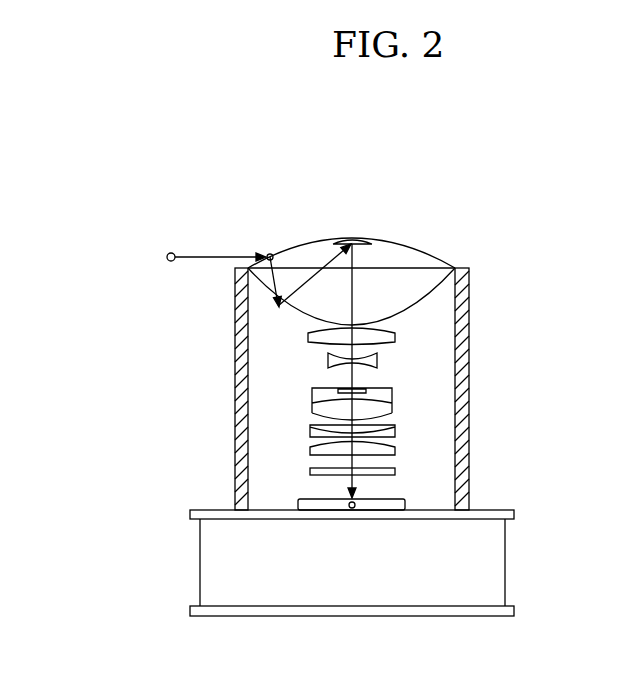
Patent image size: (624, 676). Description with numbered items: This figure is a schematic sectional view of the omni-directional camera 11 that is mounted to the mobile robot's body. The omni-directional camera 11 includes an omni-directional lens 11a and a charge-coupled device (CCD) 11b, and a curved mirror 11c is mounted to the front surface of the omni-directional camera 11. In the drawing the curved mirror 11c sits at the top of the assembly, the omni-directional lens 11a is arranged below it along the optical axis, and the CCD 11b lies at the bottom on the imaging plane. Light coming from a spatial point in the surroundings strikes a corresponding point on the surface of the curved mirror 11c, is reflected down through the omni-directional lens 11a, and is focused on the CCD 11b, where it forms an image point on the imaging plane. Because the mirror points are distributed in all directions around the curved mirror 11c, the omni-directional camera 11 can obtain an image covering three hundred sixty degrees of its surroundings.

The omni-directional camera 11 is at (366, 149).
The omni-directional lens 11a is at (479, 341).
The charge-coupled device (CCD) 11b is at (405, 503).
The curved mirror 11c is at (411, 240).